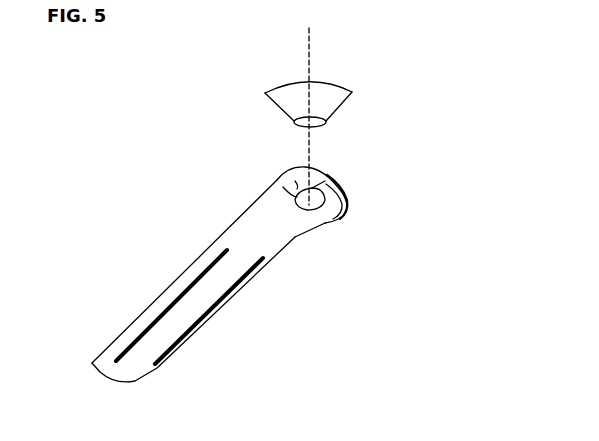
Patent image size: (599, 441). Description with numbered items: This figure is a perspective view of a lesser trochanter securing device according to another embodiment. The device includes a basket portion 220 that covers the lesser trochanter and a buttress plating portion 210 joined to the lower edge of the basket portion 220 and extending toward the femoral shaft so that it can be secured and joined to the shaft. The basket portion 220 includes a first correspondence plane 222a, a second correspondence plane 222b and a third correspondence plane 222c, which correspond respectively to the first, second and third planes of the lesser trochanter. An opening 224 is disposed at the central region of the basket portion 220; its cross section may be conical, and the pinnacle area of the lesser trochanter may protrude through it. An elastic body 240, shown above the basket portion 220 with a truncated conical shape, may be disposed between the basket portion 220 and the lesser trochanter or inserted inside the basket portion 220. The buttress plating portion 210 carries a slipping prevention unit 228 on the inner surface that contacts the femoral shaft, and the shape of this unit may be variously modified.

The buttress plating portion 210 is at (222, 305).
The basket portion 220 is at (355, 227).
The first correspondence plane 222a is at (296, 183).
The second correspondence plane 222b is at (317, 212).
The third correspondence plane 222c is at (326, 186).
The opening 224 is at (283, 187).
The slipping prevention unit 228 is at (158, 322).
The elastic body 240 is at (352, 92).